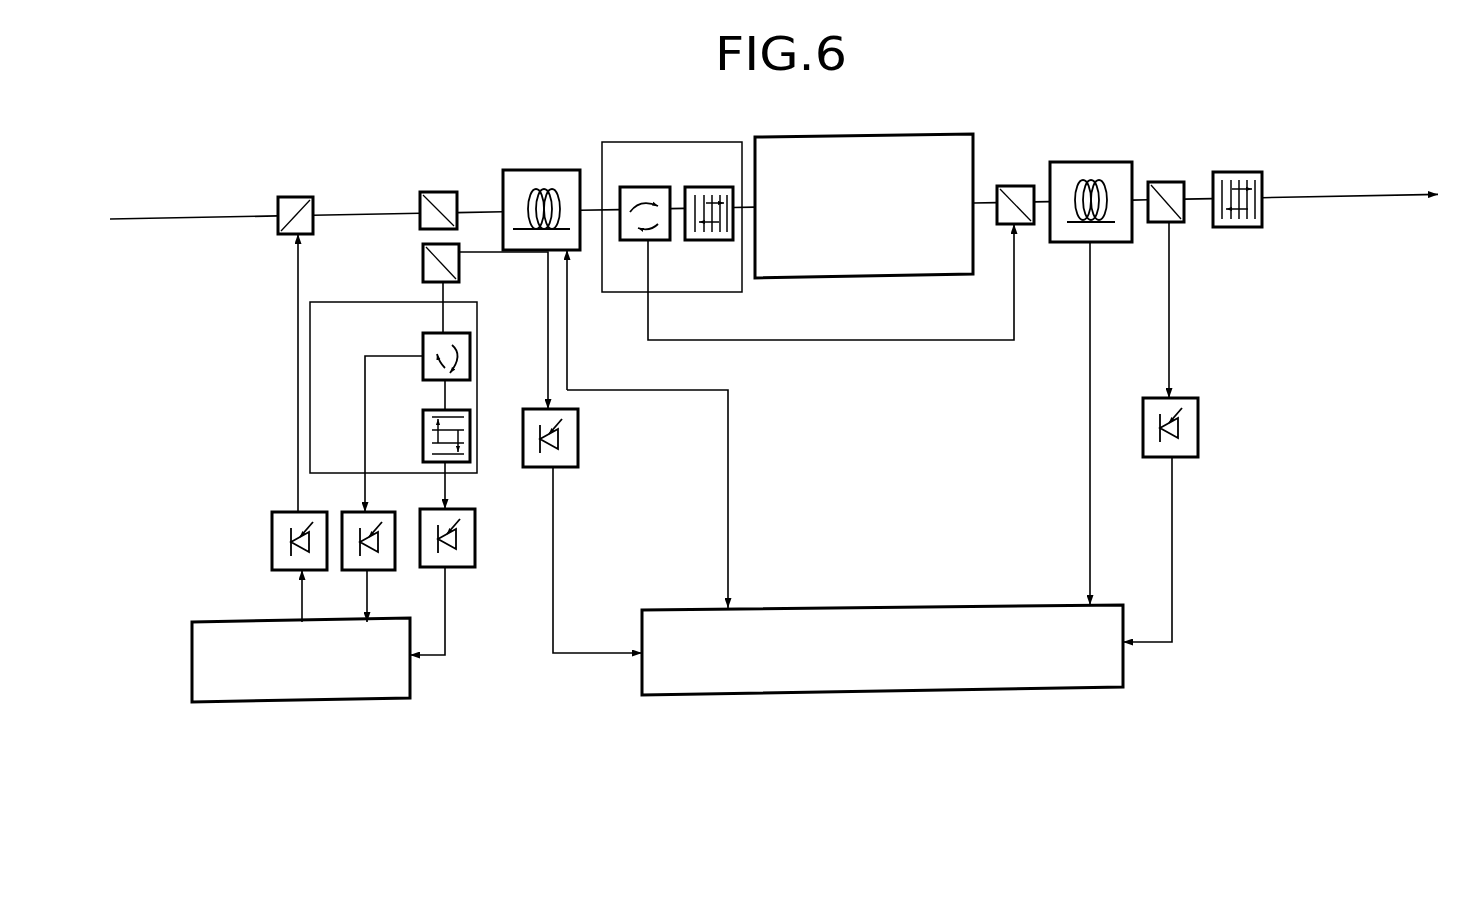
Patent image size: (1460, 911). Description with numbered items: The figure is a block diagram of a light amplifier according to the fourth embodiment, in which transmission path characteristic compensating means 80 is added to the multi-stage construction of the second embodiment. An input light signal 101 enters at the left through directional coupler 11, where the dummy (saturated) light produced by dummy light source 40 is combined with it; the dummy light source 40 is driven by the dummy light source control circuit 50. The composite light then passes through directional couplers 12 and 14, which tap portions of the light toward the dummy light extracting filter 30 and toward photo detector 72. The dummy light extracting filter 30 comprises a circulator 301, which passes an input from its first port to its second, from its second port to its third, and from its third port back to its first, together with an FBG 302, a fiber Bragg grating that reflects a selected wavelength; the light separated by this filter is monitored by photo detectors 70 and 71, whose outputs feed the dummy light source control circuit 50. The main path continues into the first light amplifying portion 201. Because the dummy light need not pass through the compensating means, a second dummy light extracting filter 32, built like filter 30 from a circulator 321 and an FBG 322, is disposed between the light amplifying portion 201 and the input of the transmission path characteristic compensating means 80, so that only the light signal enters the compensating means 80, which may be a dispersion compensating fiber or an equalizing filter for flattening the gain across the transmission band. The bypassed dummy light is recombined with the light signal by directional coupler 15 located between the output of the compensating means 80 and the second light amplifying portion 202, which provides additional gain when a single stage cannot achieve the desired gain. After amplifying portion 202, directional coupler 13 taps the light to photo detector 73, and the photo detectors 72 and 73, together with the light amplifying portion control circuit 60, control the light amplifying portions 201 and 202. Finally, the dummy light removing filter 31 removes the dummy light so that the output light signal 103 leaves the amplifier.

The directional coupler 11 is at (299, 197).
The directional coupler 12 is at (439, 192).
The directional coupler 13 is at (1170, 182).
The directional coupler 14 is at (460, 252).
The directional coupler 15 is at (1016, 186).
The dummy light extracting filter 30 is at (350, 303).
The circulator 301 is at (423, 372).
The FBG (Fiber Bragg Grating) 302 is at (423, 438).
The dummy light removing filter 31 is at (1237, 172).
The dummy light extracting filter 32 is at (663, 143).
The circulator 321 is at (632, 189).
The FBG 322 is at (707, 240).
The dummy light source 40 is at (288, 508).
The dummy light source control circuit 50 is at (250, 620).
The light amplifying portion control circuit 60 is at (874, 610).
The photo detector 70 is at (465, 507).
The photo detector 71 is at (380, 510).
The photo detector 72 is at (580, 438).
The photo detector 73 is at (1188, 391).
The transmission path characteristic compensating means 80 is at (885, 139).
The light amplifying portion 201 is at (543, 171).
The light amplifying portion 202 is at (1092, 162).
The light signal 101 is at (193, 230).
The light signal 103 is at (1352, 212).